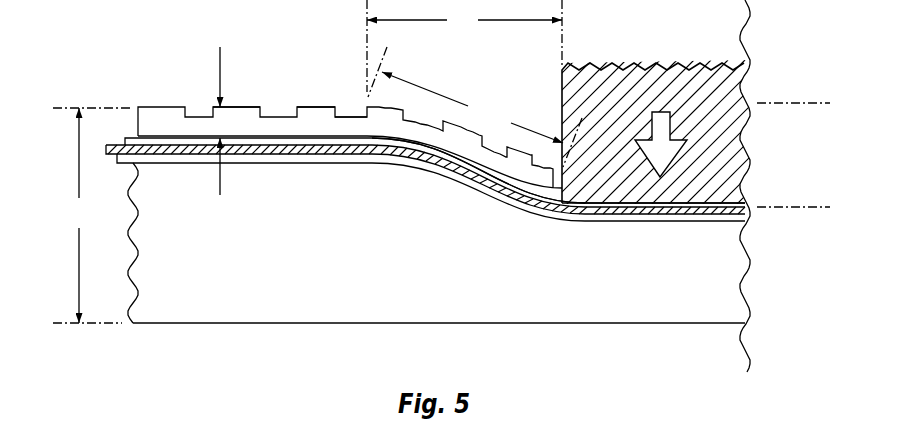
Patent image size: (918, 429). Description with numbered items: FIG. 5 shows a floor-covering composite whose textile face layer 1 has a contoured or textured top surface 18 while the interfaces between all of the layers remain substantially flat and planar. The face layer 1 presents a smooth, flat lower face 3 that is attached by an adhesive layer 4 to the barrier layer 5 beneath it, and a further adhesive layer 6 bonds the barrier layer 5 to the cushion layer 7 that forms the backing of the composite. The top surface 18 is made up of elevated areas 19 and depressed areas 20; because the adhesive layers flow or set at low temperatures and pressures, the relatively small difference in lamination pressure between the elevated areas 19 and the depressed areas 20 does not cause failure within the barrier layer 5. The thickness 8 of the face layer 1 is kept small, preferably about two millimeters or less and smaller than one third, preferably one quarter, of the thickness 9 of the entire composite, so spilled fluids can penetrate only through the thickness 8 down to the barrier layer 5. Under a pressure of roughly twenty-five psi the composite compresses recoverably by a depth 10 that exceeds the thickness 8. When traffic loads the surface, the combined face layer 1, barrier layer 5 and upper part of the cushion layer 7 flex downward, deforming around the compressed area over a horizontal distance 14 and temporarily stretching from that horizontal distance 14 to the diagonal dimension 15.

The face layer 1 is at (170, 113).
The lower face 3 is at (157, 140).
The adhesive layer 4 is at (343, 141).
The barrier layer 5 is at (392, 153).
The adhesive layer 6 is at (437, 168).
The cushion layer 7 is at (203, 312).
The thickness of face layer 8 is at (220, 109).
The thickness of the entire composite 9 is at (79, 215).
The depth 10 is at (795, 252).
The horizontal distance 14 is at (464, 20).
The diagonal dimension 15 is at (472, 107).
The top surface 18 is at (242, 102).
The elevated areas 19 is at (313, 102).
The depressed areas 20 is at (350, 115).